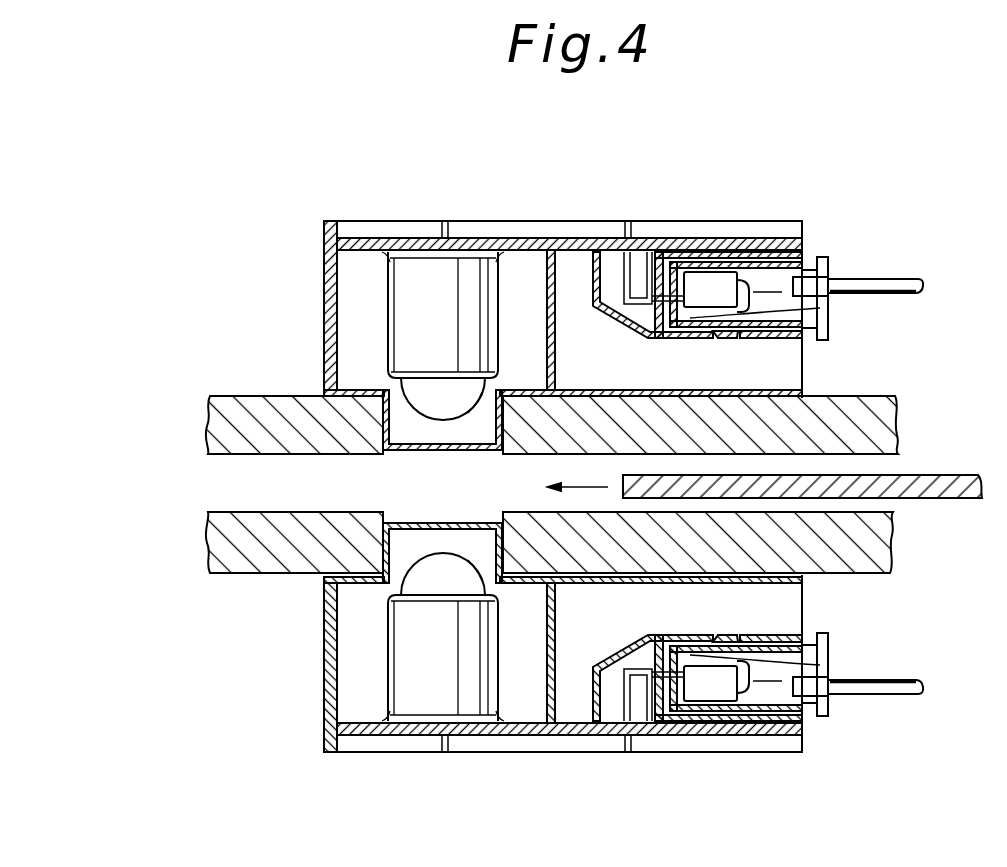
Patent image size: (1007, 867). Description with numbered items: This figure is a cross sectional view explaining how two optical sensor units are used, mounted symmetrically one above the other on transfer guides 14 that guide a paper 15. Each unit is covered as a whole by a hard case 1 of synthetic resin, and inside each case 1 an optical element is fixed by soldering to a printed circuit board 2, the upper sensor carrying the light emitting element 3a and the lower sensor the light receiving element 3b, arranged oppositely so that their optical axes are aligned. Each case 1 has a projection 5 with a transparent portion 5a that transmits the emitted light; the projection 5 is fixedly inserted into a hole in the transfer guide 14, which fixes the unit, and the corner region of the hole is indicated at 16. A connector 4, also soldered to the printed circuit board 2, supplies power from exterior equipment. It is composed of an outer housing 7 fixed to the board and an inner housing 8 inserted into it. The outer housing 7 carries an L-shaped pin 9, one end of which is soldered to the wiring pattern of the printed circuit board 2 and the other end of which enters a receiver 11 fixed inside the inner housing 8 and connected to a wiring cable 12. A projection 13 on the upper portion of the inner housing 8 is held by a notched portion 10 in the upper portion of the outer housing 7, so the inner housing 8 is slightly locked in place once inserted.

The case 1 is at (324, 336).
The printed circuit board 2 is at (362, 240).
The light emitting element 3a is at (388, 298).
The light receiving element 3b is at (400, 686).
The connector 4 is at (626, 326).
The projection 5 is at (408, 533).
The transparent portion 5a is at (436, 438).
The outer housing 7 is at (594, 278).
The inner housing 8 is at (826, 260).
The pin 9 is at (628, 266).
The notched portion 10 is at (742, 339).
The receiver 11 is at (820, 310).
The wiring cable 12 is at (902, 281).
The projection 13 is at (727, 338).
The transfer guide 14 is at (215, 426).
The paper 15 is at (934, 488).
The corner edge 16 is at (384, 440).